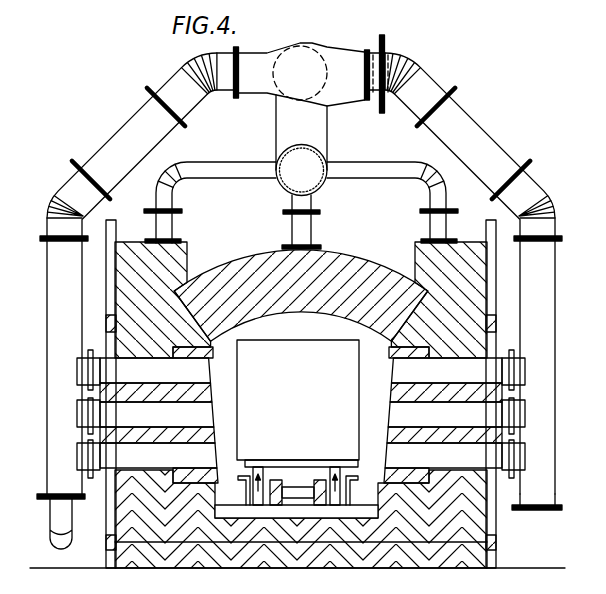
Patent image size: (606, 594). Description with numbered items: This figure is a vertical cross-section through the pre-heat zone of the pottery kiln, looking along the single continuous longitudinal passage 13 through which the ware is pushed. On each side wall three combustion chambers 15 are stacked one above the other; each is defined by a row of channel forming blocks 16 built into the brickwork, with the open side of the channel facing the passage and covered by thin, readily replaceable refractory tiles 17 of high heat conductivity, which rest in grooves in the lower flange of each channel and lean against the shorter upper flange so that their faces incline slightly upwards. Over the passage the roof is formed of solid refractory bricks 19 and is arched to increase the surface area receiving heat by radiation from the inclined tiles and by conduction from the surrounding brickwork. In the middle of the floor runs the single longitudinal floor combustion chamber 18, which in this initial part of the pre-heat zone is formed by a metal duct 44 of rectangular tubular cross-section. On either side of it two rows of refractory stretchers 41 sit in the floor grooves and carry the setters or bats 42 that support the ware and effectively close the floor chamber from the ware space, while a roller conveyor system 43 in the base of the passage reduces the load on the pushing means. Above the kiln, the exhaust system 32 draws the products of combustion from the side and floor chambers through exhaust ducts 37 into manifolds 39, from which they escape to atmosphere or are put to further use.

The longitudinal passage 13 is at (228, 488).
The combustion chambers 15 is at (205, 410).
The channel forming blocks 16 is at (191, 374).
The refractory tiles 17 is at (210, 375).
The floor combustion chamber 18 is at (305, 497).
The solid refractory bricks 19 is at (297, 300).
The exhaust system 32 is at (470, 136).
The exhaust ducts 37 is at (110, 460).
The manifolds 39 is at (290, 167).
The refractory stretchers 41 is at (260, 487).
The setters or bats 42 is at (318, 480).
The roller conveyor system 43 is at (263, 483).
The metal duct 44 is at (293, 492).